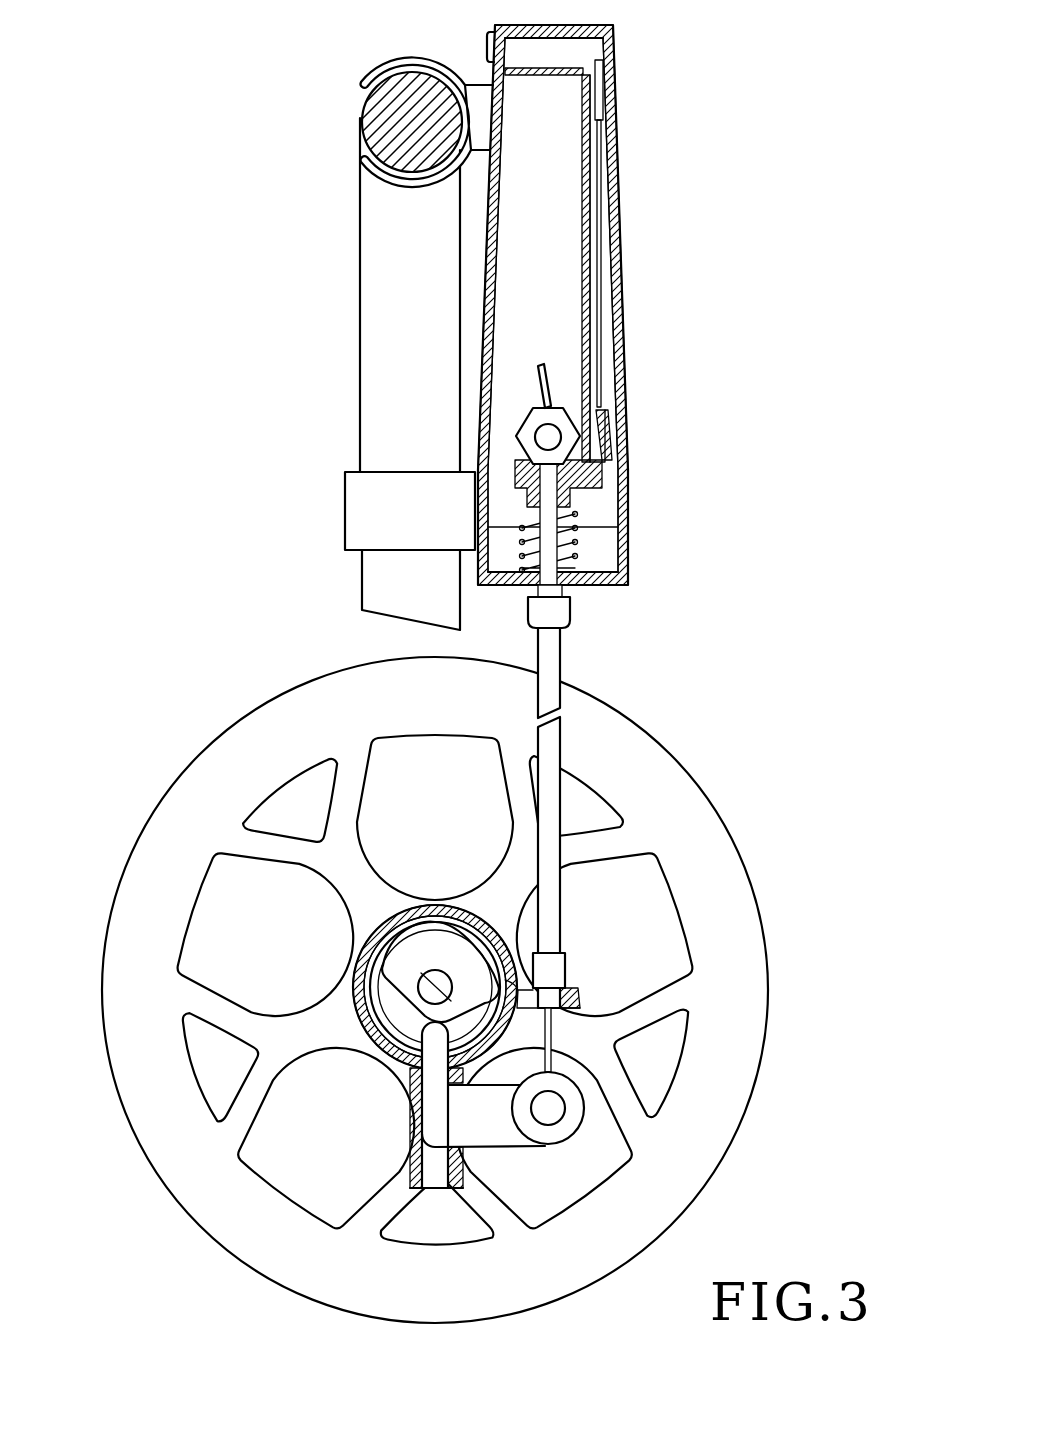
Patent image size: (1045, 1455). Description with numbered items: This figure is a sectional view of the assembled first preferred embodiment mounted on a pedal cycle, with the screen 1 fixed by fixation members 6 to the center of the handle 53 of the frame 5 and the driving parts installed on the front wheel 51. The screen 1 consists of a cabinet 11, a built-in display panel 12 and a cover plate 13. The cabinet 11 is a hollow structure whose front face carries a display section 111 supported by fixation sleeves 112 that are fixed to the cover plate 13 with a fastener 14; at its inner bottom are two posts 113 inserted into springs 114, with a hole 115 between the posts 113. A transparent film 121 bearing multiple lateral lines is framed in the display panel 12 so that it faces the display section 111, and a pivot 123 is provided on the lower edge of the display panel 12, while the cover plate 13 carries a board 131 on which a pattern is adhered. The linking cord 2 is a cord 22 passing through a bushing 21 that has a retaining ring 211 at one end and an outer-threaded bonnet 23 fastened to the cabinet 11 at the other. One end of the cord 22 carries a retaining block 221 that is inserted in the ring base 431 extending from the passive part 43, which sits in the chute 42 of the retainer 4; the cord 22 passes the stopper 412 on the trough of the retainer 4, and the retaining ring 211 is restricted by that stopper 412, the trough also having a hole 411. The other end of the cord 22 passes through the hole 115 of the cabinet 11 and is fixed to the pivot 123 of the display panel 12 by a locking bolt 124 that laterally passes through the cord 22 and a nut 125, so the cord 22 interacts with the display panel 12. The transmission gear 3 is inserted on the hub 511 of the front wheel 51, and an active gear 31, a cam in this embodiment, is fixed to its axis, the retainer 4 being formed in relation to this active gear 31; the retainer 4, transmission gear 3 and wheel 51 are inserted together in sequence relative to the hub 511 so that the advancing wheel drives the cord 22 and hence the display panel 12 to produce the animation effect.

The screen 1 is at (496, 315).
The cabinet 11 is at (585, 33).
The display section 111 is at (620, 343).
The fixation sleeves 112 is at (602, 542).
The posts 113 is at (550, 588).
The springs 114 is at (573, 527).
The hole 115 is at (628, 577).
The display panel 12 is at (600, 103).
The transparent film 121 is at (602, 222).
The pivot 123 is at (580, 452).
The locking bolt 124 is at (548, 437).
The nut 125 is at (527, 448).
The cover plate 13 is at (600, 72).
The board 131 is at (585, 270).
The fastener 14 is at (487, 55).
The linking cord 2 is at (701, 802).
The bushing 21 is at (558, 680).
The retaining ring 211 is at (552, 968).
The cord 22 is at (533, 377).
The retaining block 221 is at (557, 1108).
The bonnet 23 is at (550, 613).
The transmission gear 3 is at (309, 962).
The active gear 31 is at (412, 943).
The retainer 4 is at (560, 1182).
The hole 411 is at (372, 977).
The stopper 412 is at (580, 988).
The chute 42 is at (440, 1168).
The passive part 43 is at (485, 1128).
The ring base 431 is at (573, 1125).
The frame 5 is at (383, 323).
The front wheel 51 is at (715, 977).
The hub 511 is at (430, 998).
The handle 53 is at (405, 118).
The fixation members 6 is at (392, 175).